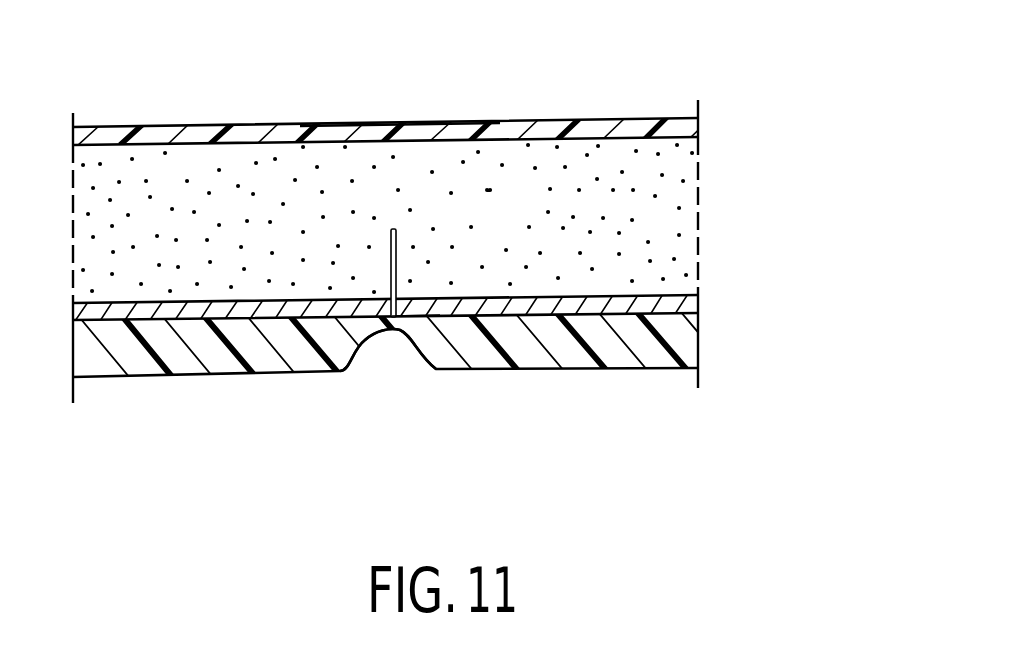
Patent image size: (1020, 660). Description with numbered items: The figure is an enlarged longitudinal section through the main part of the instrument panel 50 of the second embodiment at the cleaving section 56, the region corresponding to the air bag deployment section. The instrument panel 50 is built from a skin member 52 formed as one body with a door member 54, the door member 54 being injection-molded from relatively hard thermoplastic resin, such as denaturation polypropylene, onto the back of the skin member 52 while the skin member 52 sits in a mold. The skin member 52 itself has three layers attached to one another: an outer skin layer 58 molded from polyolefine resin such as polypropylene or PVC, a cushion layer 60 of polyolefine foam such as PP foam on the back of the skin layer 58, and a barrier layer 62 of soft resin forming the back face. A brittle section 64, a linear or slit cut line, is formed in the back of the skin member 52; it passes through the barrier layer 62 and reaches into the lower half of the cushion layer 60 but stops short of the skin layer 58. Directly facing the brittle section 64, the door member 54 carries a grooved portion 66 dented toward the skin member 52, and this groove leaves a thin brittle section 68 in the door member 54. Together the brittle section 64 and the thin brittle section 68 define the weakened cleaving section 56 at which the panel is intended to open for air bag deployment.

The instrument panel 50 is at (203, 108).
The skin member 52 is at (476, 213).
The door member 54 is at (690, 338).
The cleaving section 56 is at (401, 107).
The skin layer 58 is at (688, 126).
The cushion layer 60 is at (683, 197).
The barrier layer 62 is at (433, 273).
The brittle section 64 is at (393, 228).
The grooved portion 66 is at (412, 348).
The thin brittle section 68 is at (403, 333).